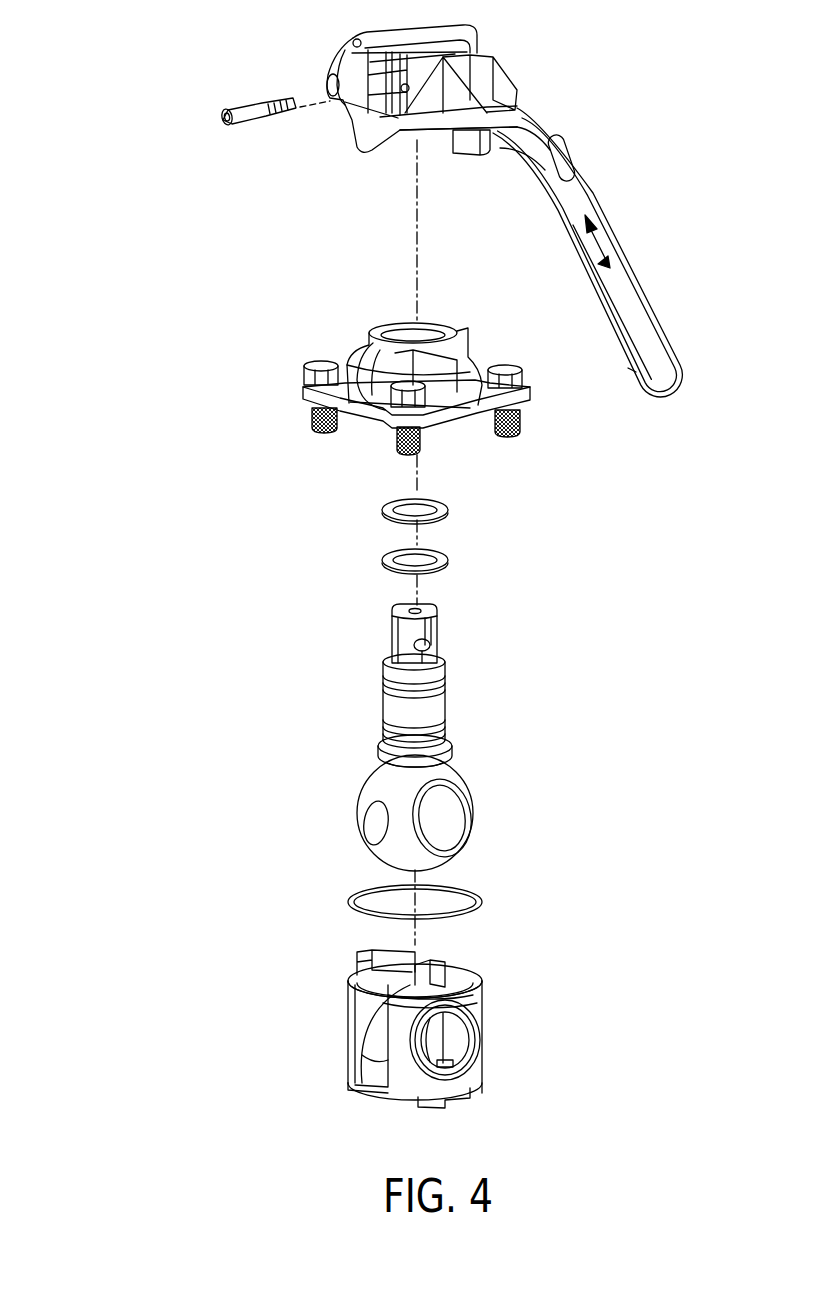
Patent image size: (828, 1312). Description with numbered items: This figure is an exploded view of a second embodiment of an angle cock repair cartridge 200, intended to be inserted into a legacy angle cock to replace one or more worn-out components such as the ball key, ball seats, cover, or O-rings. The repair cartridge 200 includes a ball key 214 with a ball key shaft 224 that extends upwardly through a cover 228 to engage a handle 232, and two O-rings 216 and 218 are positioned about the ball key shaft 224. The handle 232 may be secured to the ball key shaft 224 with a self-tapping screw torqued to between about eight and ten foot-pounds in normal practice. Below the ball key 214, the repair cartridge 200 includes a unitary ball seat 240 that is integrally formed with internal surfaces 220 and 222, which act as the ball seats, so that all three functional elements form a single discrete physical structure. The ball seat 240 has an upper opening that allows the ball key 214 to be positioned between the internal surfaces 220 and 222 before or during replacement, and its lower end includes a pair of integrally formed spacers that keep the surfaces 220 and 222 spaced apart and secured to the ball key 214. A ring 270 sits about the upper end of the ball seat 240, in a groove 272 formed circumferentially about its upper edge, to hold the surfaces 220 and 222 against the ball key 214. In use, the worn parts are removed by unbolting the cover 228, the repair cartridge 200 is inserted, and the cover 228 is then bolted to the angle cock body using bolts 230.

The repair cartridge 200 is at (138, 92).
The handle 232 is at (565, 244).
The cover 228 is at (530, 400).
The bolts 230 is at (313, 415).
The O-ring 218 is at (383, 511).
The O-ring 216 is at (383, 562).
The ball key shaft 224 is at (447, 693).
The ball key 214 is at (380, 745).
The ring 270 is at (350, 903).
The groove 272 is at (330, 980).
The internal surface 220 is at (365, 1045).
The unitary ball seat 240 is at (480, 990).
The internal surface 222 is at (480, 1040).